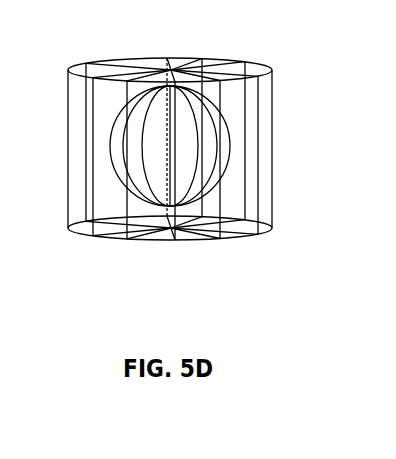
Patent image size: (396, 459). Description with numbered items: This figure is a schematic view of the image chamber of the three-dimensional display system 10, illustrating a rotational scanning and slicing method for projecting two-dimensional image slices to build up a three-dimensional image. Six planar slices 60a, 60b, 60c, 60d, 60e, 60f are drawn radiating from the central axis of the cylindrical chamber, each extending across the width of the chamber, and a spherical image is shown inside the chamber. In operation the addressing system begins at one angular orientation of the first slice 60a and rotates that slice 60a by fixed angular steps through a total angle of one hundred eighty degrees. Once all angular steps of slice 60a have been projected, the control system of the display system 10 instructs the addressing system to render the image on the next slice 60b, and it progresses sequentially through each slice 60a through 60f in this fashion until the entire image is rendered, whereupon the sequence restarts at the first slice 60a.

The three-dimensional display system 10 is at (298, 31).
The first slice 60a is at (272, 210).
The next slice 60b is at (274, 230).
The 2-D slice 60c is at (238, 237).
The 2-D slice 60d is at (175, 240).
The 2-D slice 60e is at (127, 242).
The 2-D slice 60f is at (73, 233).